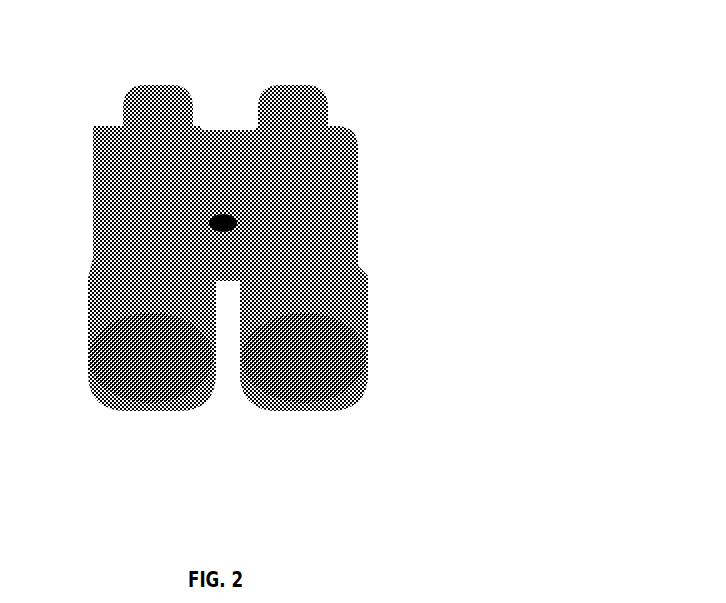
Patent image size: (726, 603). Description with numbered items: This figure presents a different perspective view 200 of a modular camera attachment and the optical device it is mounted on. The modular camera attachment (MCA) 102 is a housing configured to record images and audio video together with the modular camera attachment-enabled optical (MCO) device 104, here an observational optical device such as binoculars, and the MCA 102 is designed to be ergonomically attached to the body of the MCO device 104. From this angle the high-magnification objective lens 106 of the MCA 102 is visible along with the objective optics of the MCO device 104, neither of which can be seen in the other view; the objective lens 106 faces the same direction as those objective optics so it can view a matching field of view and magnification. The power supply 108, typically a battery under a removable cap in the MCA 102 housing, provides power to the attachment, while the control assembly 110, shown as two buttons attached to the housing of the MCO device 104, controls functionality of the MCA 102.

The modular camera attachment (MCA) 102 is at (222, 153).
The modular camera attachment-enabled optical (MCO) device 104 is at (332, 280).
The high-magnification objective lens 106 is at (212, 213).
The power supply 108 is at (216, 132).
The control assembly 110 is at (120, 182).
The perspective view 200 is at (625, 489).